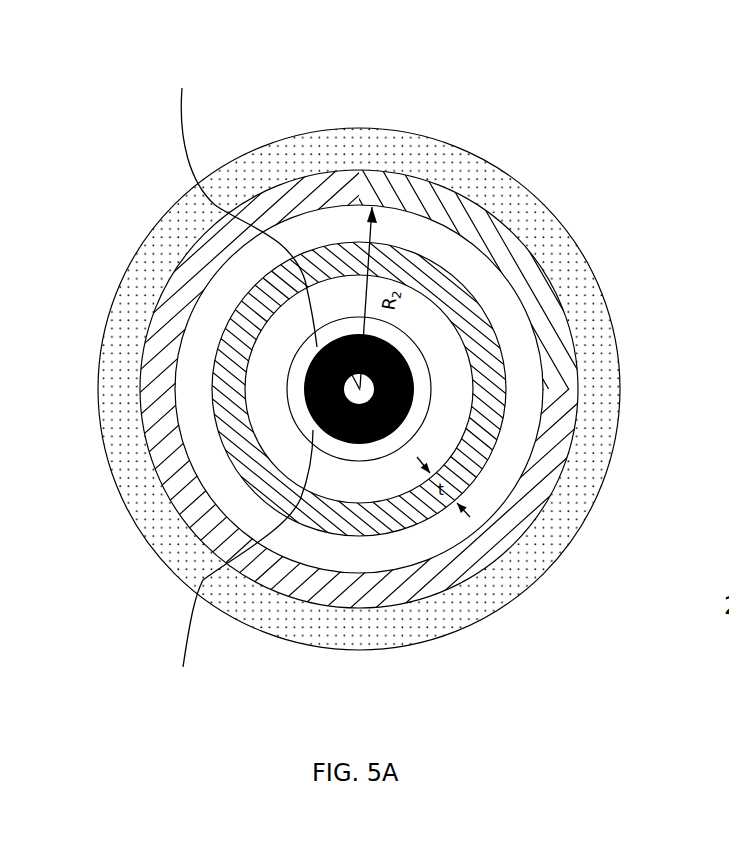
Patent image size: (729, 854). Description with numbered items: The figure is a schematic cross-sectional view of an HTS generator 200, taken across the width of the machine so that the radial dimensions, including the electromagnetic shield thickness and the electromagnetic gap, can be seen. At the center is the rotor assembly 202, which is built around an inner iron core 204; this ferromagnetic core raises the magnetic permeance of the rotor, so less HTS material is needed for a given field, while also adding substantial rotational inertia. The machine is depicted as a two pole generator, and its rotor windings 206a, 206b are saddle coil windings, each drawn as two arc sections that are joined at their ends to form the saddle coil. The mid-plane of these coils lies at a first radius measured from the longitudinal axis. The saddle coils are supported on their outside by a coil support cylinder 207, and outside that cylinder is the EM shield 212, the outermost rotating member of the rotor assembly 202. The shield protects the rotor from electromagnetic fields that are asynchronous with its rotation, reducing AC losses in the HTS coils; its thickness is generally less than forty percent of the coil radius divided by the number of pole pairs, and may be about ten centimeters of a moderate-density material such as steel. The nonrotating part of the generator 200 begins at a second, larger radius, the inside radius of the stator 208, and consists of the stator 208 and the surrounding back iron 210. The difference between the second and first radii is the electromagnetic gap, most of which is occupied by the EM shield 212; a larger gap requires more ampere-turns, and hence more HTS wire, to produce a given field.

The HTS generator 200 is at (377, 42).
The rotor assembly 202 is at (473, 385).
The inner iron core 204 is at (337, 413).
The rotor winding 206a is at (237, 203).
The rotor winding 206b is at (235, 571).
The coil support cylinder 207 is at (427, 412).
The stator 208 is at (507, 253).
The back iron 210 is at (470, 165).
The EM shield 212 is at (430, 382).